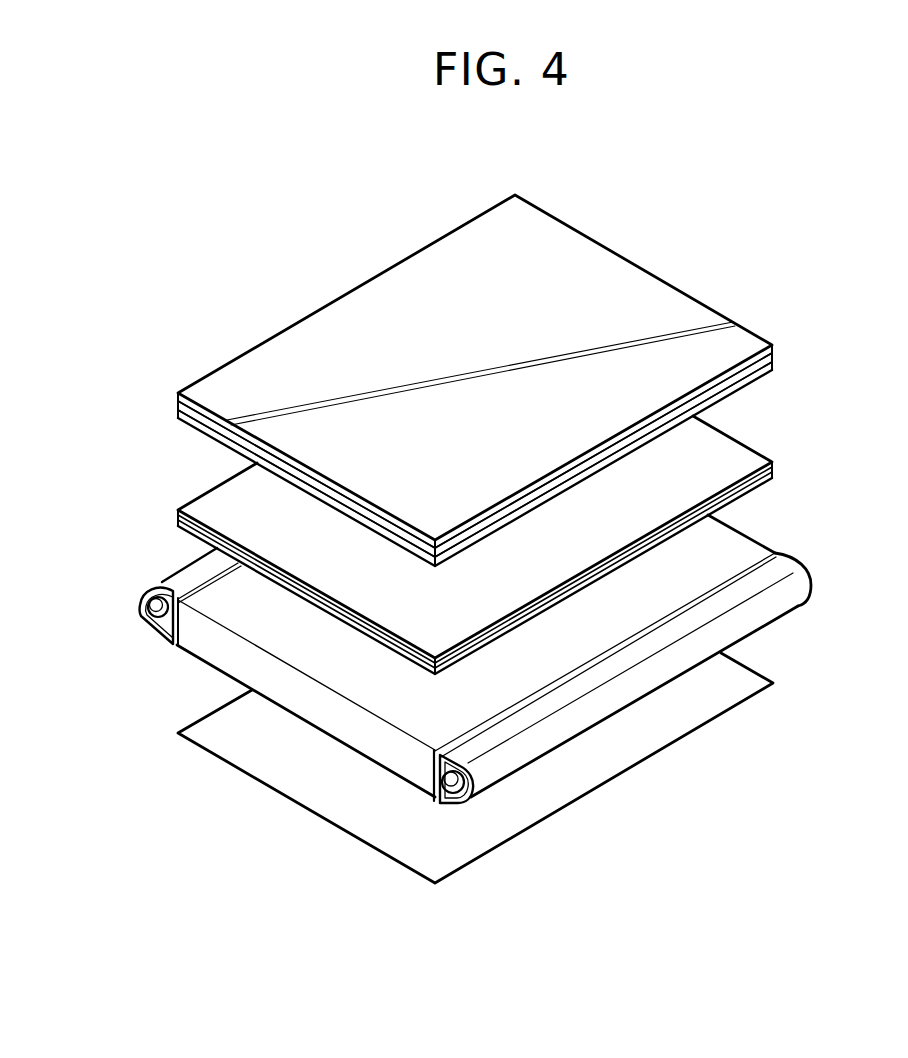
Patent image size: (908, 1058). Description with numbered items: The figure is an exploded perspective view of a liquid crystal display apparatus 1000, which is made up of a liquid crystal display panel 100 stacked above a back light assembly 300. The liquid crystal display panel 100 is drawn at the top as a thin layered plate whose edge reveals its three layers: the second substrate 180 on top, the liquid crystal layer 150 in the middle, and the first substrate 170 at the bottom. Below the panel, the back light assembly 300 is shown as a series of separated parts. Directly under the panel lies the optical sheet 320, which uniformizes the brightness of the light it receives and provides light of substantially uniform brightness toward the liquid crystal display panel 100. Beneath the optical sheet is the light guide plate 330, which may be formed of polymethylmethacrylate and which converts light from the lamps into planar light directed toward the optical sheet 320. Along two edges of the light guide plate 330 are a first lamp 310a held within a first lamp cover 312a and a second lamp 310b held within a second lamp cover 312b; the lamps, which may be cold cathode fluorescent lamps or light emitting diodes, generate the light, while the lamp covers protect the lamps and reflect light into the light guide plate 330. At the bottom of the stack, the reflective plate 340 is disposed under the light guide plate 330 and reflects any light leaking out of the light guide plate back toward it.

The liquid crystal display apparatus 1000 is at (540, 138).
The liquid crystal display panel 100 is at (533, 380).
The second substrate 180 is at (774, 346).
The liquid crystal layer 150 is at (774, 357).
The first substrate 170 is at (774, 369).
The back light assembly 300 is at (72, 509).
The optical sheet 320 is at (178, 512).
The first lamp cover 312a is at (167, 589).
The first lamp 310a is at (158, 607).
The light guide plate 330 is at (197, 647).
The reflective plate 340 is at (192, 730).
The second lamp cover 312b is at (493, 777).
The second lamp 310b is at (452, 792).